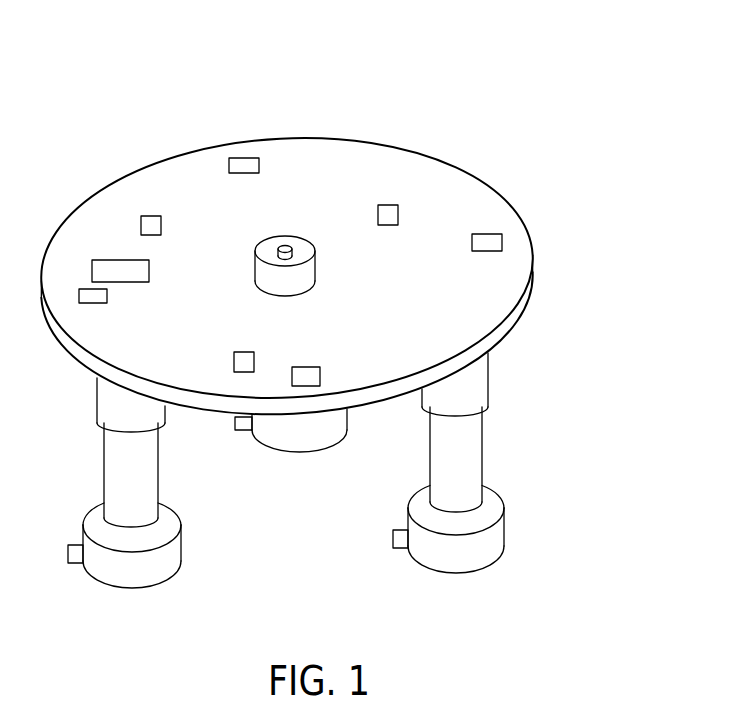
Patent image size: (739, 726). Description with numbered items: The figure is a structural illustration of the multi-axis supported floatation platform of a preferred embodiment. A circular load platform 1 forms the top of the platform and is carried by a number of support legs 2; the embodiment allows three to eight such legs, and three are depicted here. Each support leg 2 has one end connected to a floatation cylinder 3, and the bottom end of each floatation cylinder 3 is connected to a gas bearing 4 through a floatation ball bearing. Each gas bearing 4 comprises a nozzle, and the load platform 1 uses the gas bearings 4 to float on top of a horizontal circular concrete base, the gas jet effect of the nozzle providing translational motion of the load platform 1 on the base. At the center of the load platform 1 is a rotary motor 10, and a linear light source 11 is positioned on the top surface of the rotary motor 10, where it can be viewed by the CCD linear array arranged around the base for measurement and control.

The load platform 1 is at (287, 208).
The support leg 2 is at (348, 334).
The floatation cylinder 3 is at (358, 411).
The gas bearing 4 is at (238, 576).
The rotary motor 10 is at (317, 154).
The linear light source 11 is at (380, 136).